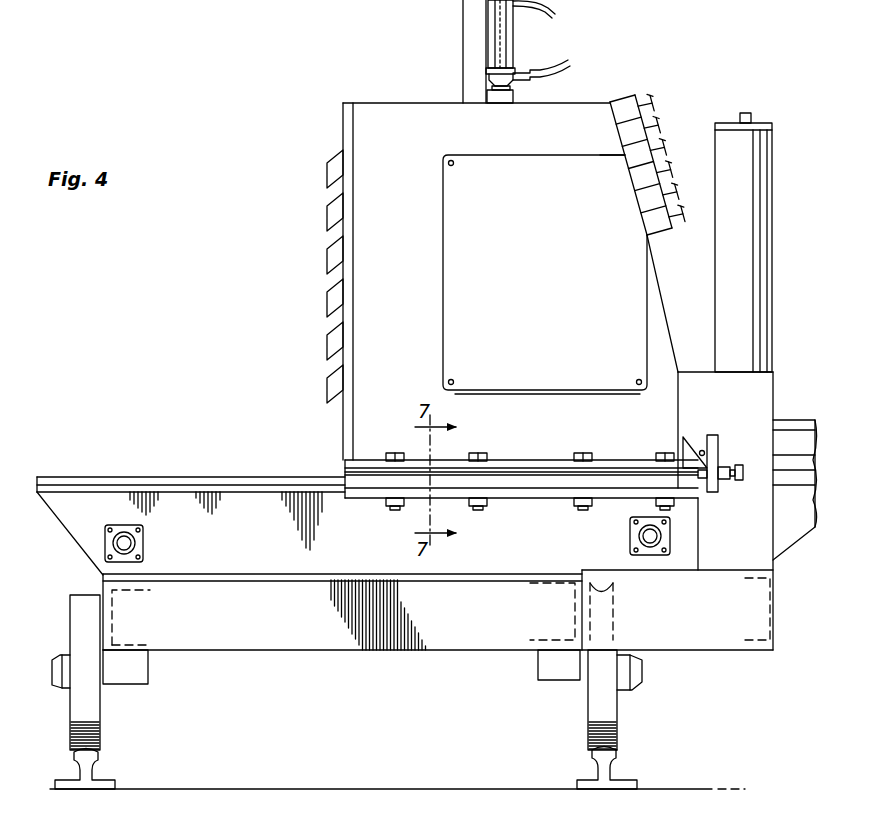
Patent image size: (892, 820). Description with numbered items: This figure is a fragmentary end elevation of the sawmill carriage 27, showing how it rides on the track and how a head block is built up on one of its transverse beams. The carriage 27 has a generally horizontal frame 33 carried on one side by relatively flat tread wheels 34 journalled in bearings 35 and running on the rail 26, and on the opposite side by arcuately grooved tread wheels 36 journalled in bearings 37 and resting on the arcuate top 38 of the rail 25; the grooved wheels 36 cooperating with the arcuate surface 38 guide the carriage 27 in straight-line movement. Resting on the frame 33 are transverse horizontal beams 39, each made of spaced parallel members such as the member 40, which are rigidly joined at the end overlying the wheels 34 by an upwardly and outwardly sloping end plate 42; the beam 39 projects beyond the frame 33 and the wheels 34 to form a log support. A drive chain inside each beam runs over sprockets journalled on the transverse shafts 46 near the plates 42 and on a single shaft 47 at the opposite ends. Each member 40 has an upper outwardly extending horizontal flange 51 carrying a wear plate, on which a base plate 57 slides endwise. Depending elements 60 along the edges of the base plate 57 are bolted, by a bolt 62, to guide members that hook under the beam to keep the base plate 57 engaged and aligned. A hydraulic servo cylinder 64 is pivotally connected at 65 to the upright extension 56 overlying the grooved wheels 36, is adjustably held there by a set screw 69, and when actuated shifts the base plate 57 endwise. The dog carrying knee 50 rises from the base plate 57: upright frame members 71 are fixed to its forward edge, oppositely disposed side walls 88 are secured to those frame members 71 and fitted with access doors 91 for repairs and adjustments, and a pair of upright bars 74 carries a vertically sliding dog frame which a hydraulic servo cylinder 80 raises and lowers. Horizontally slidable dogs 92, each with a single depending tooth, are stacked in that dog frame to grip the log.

The rail 25 is at (620, 754).
The rail 26 is at (96, 760).
The carriage 27 is at (707, 652).
The frame 33 is at (375, 652).
The tread wheels 34 is at (100, 722).
The bearings 35 is at (140, 677).
The grooved tread wheels 36 is at (590, 705).
The bearings 37 is at (548, 675).
The arcuate top 38 is at (594, 760).
The horizontal beams 39 is at (200, 468).
The transverse parallel member 40 is at (262, 492).
The sloping end plate 42 is at (68, 530).
The shafts 46 is at (143, 545).
The shaft 47 is at (630, 536).
The dog carrying knee 50 is at (343, 98).
The horizontal flange 51 is at (195, 492).
The upright extension 56 is at (720, 440).
The base plate 57 is at (440, 470).
The depending elements 60 is at (505, 478).
The bolt 62 is at (385, 454).
The hydraulic servo cylinder 64 is at (688, 442).
The pivotal connection 65 is at (702, 450).
The set screw 69 is at (736, 482).
The frame members 71 is at (352, 388).
The upright bars 74 is at (462, 32).
The hydraulic servo cylinder 80 is at (508, 44).
The side walls 88 is at (370, 108).
The access doors 91 is at (450, 265).
The dogs 92 is at (336, 150).